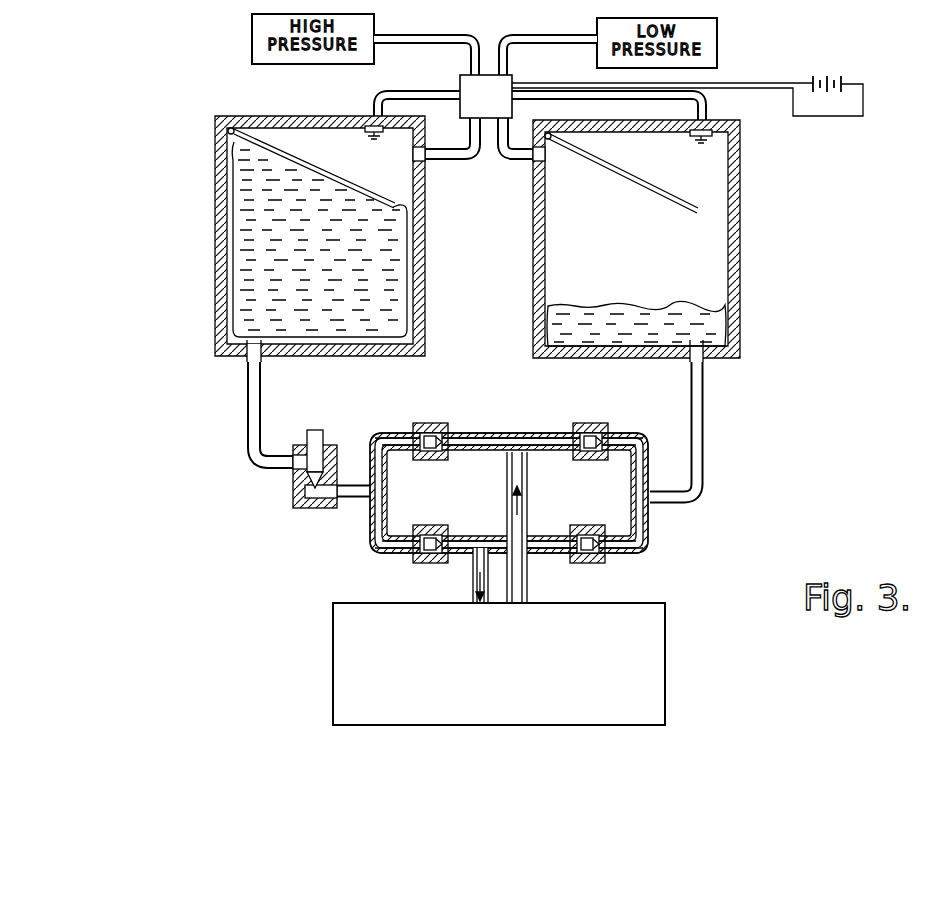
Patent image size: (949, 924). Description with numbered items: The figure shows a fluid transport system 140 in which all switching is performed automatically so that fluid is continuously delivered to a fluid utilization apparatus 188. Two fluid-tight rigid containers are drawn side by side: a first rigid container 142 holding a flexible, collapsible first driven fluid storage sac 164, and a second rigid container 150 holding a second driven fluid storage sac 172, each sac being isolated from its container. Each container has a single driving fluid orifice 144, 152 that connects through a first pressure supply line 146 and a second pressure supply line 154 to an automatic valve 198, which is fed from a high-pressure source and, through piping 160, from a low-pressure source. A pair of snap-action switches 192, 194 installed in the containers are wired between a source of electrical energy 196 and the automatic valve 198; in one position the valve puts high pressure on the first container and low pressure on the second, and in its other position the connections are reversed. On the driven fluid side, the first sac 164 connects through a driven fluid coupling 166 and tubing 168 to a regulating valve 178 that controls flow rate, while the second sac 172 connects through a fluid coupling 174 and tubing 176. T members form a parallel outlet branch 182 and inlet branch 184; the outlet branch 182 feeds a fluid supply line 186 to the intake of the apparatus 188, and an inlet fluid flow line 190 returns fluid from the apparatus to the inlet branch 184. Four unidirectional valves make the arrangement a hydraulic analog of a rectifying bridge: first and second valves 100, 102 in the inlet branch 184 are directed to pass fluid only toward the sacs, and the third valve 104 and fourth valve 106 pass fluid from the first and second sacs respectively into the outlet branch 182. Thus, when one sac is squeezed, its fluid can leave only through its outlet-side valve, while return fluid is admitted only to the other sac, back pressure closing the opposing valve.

The first unidirectional flow valve 100 is at (425, 423).
The second unidirectional flow valve 102 is at (576, 425).
The third valve 104 is at (449, 526).
The fourth valve 106 is at (602, 520).
The fluid transport system 140 is at (301, 540).
The first rigid container 142 is at (216, 252).
The driving fluid orifice 144 is at (426, 163).
The first pressure supply line 146 is at (448, 150).
The second rigid container 150 is at (739, 235).
The driving fluid orifice 152 is at (536, 166).
The second pressure supply line 154 is at (504, 154).
The piping 160 is at (476, 38).
The first driven fluid storage sac 164 is at (392, 200).
The driven fluid coupling 166 is at (246, 360).
The tubing 168 is at (247, 441).
The second driven fluid storage sac 172 is at (709, 318).
The fluid coupling 174 is at (704, 368).
The tubing 176 is at (703, 453).
The regulating valve 178 is at (294, 500).
The outlet branch 182 is at (476, 539).
The inlet branch 184 is at (477, 434).
The fluid supply line 186 is at (472, 584).
The fluid utilization apparatus 188 is at (334, 685).
The inlet fluid flow line 190 is at (529, 588).
The snap-action switch 192 is at (366, 126).
The snap-action switch 194 is at (717, 140).
The source of electrical energy 196 is at (844, 84).
The automatic valve 198 is at (468, 82).